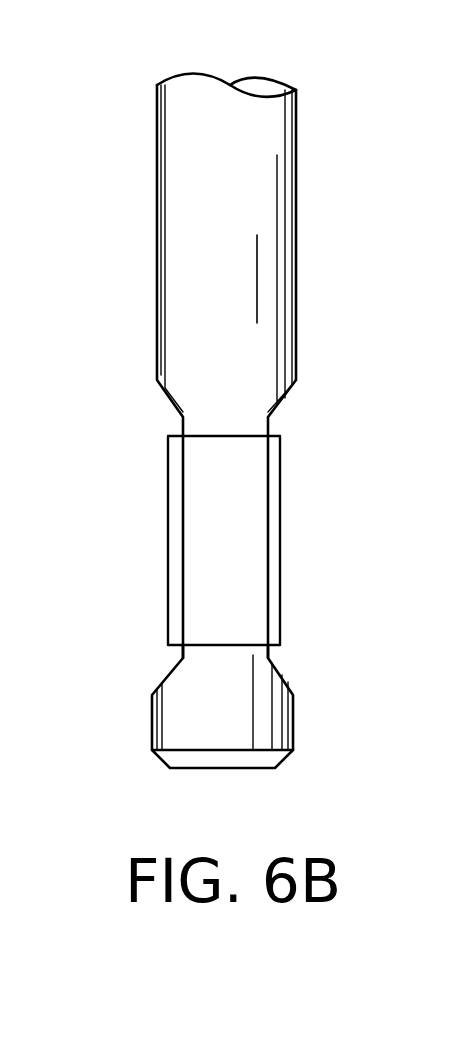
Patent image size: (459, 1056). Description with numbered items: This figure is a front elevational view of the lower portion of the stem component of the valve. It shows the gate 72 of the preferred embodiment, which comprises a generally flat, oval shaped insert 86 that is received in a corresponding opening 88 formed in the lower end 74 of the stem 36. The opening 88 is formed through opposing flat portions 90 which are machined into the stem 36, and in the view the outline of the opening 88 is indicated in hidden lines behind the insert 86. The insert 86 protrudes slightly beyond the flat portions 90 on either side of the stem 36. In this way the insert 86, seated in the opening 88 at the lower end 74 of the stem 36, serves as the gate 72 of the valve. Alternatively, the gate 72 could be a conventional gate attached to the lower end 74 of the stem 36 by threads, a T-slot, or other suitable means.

The stem 36 is at (299, 134).
The gate 72 is at (168, 527).
The lower end 74 is at (265, 296).
The insert 86 is at (281, 573).
The opening 88 is at (250, 437).
The flat portions 90 is at (181, 652).